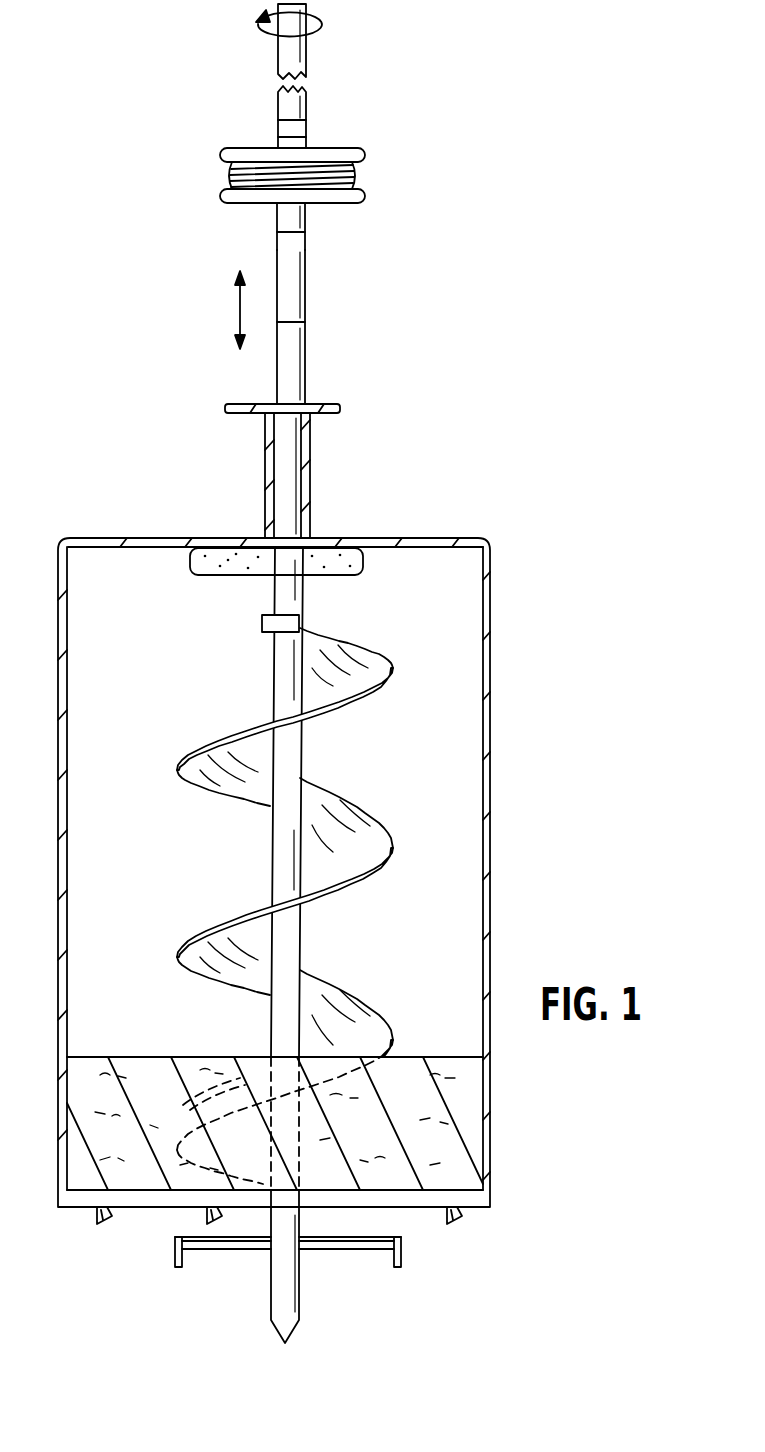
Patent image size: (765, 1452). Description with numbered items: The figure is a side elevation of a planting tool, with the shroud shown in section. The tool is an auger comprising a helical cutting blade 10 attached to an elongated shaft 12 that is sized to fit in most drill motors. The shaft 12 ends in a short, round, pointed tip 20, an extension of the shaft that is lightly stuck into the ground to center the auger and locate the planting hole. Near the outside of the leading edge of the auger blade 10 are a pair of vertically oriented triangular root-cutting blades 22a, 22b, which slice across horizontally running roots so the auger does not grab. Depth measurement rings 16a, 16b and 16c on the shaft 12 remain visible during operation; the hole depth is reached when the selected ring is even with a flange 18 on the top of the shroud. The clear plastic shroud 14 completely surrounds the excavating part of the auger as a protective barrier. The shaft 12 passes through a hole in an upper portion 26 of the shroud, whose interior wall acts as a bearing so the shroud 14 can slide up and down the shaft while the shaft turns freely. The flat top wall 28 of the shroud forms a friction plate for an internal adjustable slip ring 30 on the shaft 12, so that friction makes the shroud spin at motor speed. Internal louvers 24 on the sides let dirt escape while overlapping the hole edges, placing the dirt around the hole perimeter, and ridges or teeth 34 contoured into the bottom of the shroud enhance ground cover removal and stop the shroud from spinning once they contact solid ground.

The helical cutting blade 10 is at (374, 832).
The elongated shaft 12 is at (300, 770).
The shroud 14 is at (490, 636).
The depth measurement ring 16a is at (305, 322).
The depth measurement ring 16b is at (302, 232).
The depth measurement ring 16c is at (306, 137).
The flange 18 is at (320, 404).
The pointed tip 20 is at (299, 1305).
The triangular blade 22a is at (185, 1268).
The triangular blade 22b is at (397, 1268).
The internal louvers 24 is at (137, 1073).
The upper portion of the shroud 26 is at (311, 490).
The top wall 28 is at (418, 538).
The adjustable slip ring 30 is at (363, 568).
The ridges or teeth 34 is at (110, 1212).